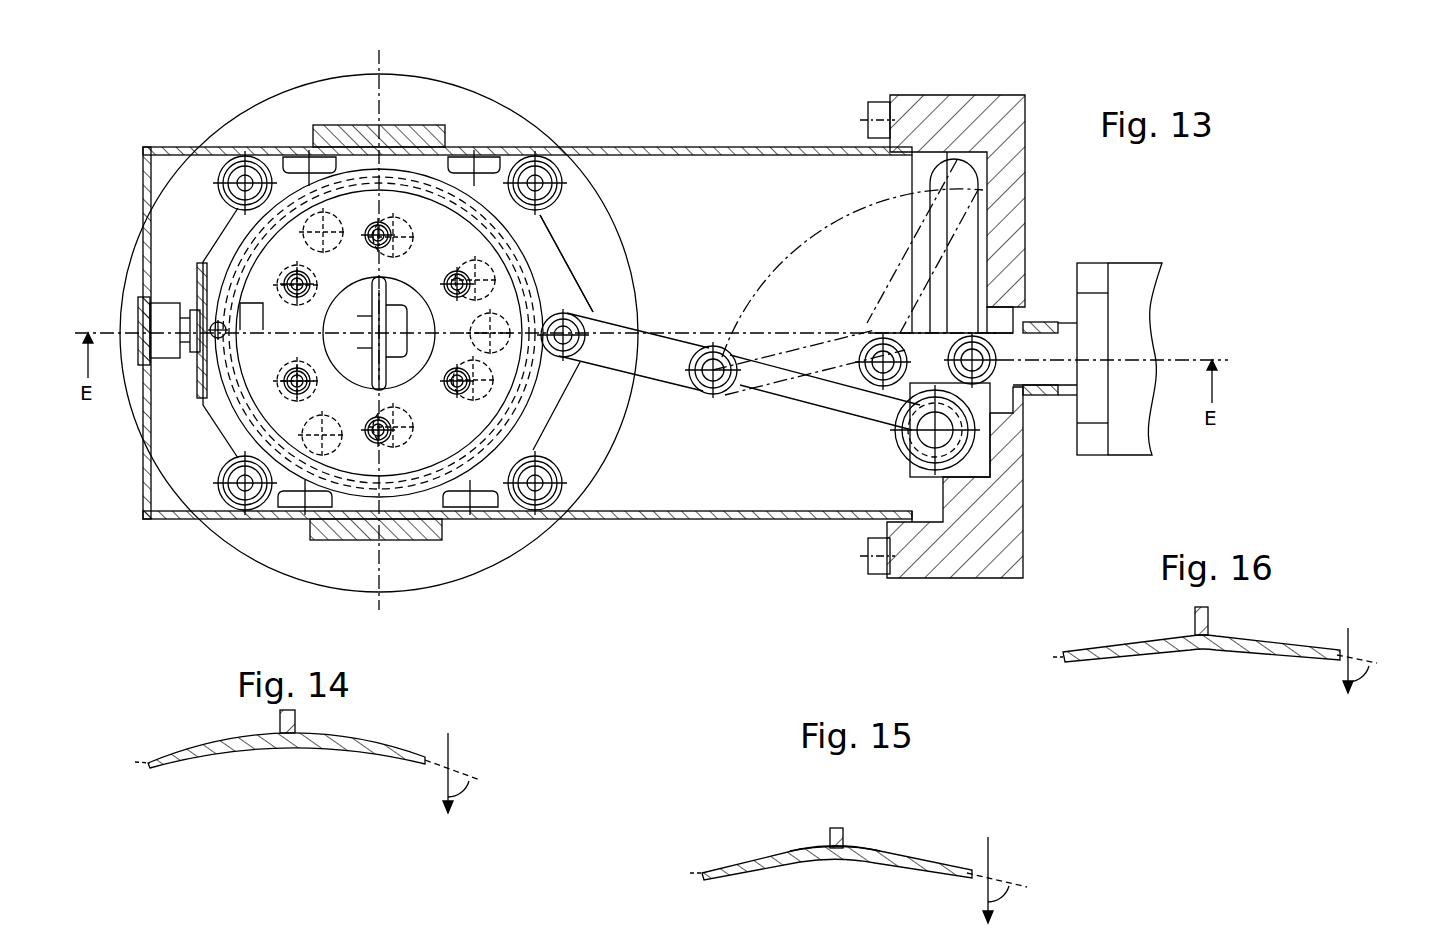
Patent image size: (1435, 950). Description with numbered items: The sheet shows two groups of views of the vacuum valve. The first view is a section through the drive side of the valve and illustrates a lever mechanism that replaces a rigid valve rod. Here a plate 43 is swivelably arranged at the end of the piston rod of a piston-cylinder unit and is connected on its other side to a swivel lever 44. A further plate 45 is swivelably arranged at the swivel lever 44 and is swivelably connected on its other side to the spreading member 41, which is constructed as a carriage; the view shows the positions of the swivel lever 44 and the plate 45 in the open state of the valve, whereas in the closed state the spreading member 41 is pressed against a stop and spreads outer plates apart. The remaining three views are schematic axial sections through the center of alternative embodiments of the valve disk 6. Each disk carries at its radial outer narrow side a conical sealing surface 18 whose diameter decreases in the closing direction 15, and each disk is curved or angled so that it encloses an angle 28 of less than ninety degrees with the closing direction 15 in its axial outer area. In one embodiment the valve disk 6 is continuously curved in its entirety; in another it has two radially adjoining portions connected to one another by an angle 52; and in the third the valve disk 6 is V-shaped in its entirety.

In FIG. 13, the spreading member 41 is at (557, 233).
In FIG. 13, the plate 43 is at (897, 410).
In FIG. 13, the swivel lever 44 is at (760, 395).
In FIG. 13, the plate 45 is at (640, 372).
In FIG. 14, the valve disk 6 is at (338, 745).
In FIG. 15, the valve disk 6 is at (885, 863).
In FIG. 16, the valve disk 6 is at (1258, 653).
In FIG. 14, the sealing surface 18 is at (150, 765).
In FIG. 15, the sealing surface 18 is at (698, 877).
In FIG. 16, the sealing surface 18 is at (1062, 660).
In FIG. 14, the closing direction 15 is at (452, 752).
In FIG. 15, the closing direction 15 is at (990, 857).
In FIG. 16, the closing direction 15 is at (1350, 638).
In FIG. 14, the angle 28 is at (458, 773).
In FIG. 15, the angle 28 is at (997, 882).
In FIG. 16, the angle 28 is at (1362, 655).
In FIG. 15, the angle 52 is at (810, 848).